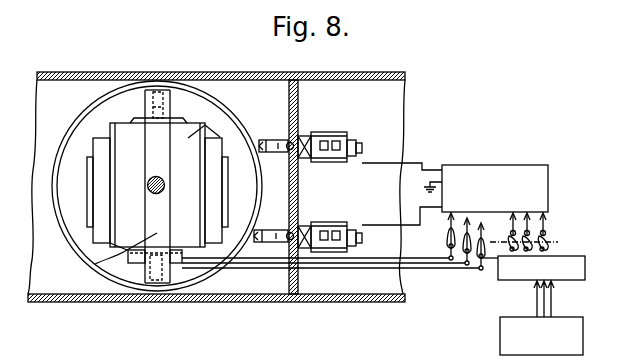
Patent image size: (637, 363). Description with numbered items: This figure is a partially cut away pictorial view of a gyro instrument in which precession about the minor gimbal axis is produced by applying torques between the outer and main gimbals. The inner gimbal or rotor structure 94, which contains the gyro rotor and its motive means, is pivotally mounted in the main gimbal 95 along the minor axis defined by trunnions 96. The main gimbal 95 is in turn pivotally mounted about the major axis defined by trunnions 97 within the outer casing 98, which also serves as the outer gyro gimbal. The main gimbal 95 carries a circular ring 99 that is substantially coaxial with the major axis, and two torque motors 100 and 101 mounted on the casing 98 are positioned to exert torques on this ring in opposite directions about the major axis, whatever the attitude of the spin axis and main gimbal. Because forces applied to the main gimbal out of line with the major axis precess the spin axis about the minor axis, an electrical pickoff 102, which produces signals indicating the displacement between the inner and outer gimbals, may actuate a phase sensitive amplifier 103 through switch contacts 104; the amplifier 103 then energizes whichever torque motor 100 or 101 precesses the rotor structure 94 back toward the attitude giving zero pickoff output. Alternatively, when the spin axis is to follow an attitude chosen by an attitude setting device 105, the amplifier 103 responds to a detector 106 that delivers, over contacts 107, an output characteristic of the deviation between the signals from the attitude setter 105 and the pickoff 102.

The inner gimbal or rotor structure 94 is at (192, 136).
The main gimbal 95 is at (95, 264).
The trunnions 96 is at (163, 107).
The trunnions 97 is at (164, 183).
The outer casing 98 is at (242, 72).
The circular ring 99 is at (75, 126).
The torque motor 100 is at (349, 135).
The torque motor 101 is at (352, 247).
The electrical pickoff 102 is at (176, 262).
The phase sensitive amplifier 103 is at (530, 165).
The switch contacts 104 is at (448, 245).
The attitude setting device 105 is at (583, 331).
The detector 106 is at (585, 268).
The contacts 107 is at (550, 238).